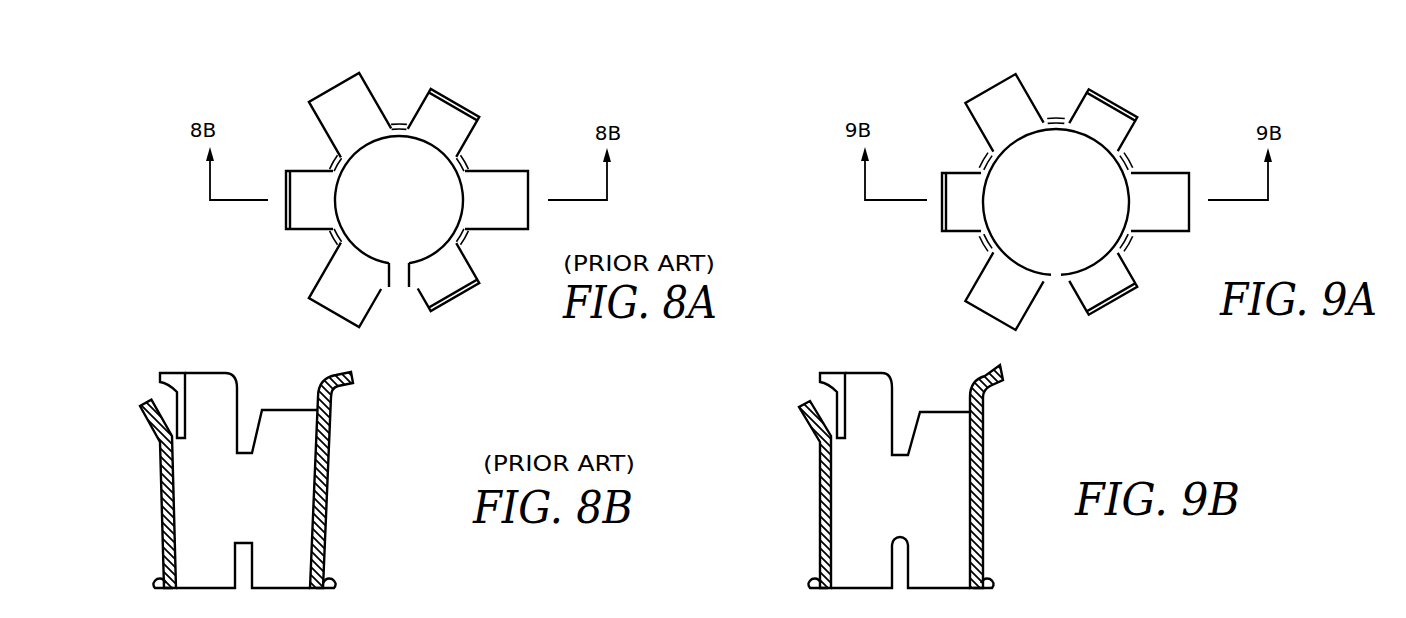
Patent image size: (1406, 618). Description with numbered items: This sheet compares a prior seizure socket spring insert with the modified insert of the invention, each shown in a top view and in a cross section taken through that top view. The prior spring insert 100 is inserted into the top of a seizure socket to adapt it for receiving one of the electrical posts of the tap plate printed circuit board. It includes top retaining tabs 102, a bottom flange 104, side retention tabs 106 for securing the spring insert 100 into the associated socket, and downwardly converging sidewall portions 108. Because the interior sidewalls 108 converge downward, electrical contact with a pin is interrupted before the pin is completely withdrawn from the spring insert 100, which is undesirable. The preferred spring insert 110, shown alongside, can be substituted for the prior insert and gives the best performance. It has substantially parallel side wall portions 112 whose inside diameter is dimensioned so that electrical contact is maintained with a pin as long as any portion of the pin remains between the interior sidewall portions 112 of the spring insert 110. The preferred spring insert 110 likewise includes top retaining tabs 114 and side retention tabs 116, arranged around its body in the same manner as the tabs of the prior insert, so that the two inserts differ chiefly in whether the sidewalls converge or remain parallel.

In FIG. 8A, the seizure socket spring insert 100 is at (414, 188).
In FIG. 8B, the seizure socket spring insert 100 is at (259, 470).
In FIG. 8A, the top retaining tabs 102 is at (352, 90).
In FIG. 8B, the top retaining tabs 102 is at (208, 377).
In FIG. 8B, the bottom flange 104 is at (330, 583).
In FIG. 8A, the side retention tabs 106 is at (455, 120).
In FIG. 8B, the side retention tabs 106 is at (302, 413).
In FIG. 8B, the downwardly converging sidewall portions 108 is at (318, 500).
In FIG. 9A, the modified spring insert 110 is at (1069, 189).
In FIG. 9B, the modified spring insert 110 is at (919, 461).
In FIG. 9B, the side wall portions 112 is at (968, 502).
In FIG. 9A, the top retaining tabs 114 is at (1007, 93).
In FIG. 9B, the top retaining tabs 114 is at (868, 377).
In FIG. 9A, the side retention tabs 116 is at (1115, 120).
In FIG. 9B, the side retention tabs 116 is at (943, 425).